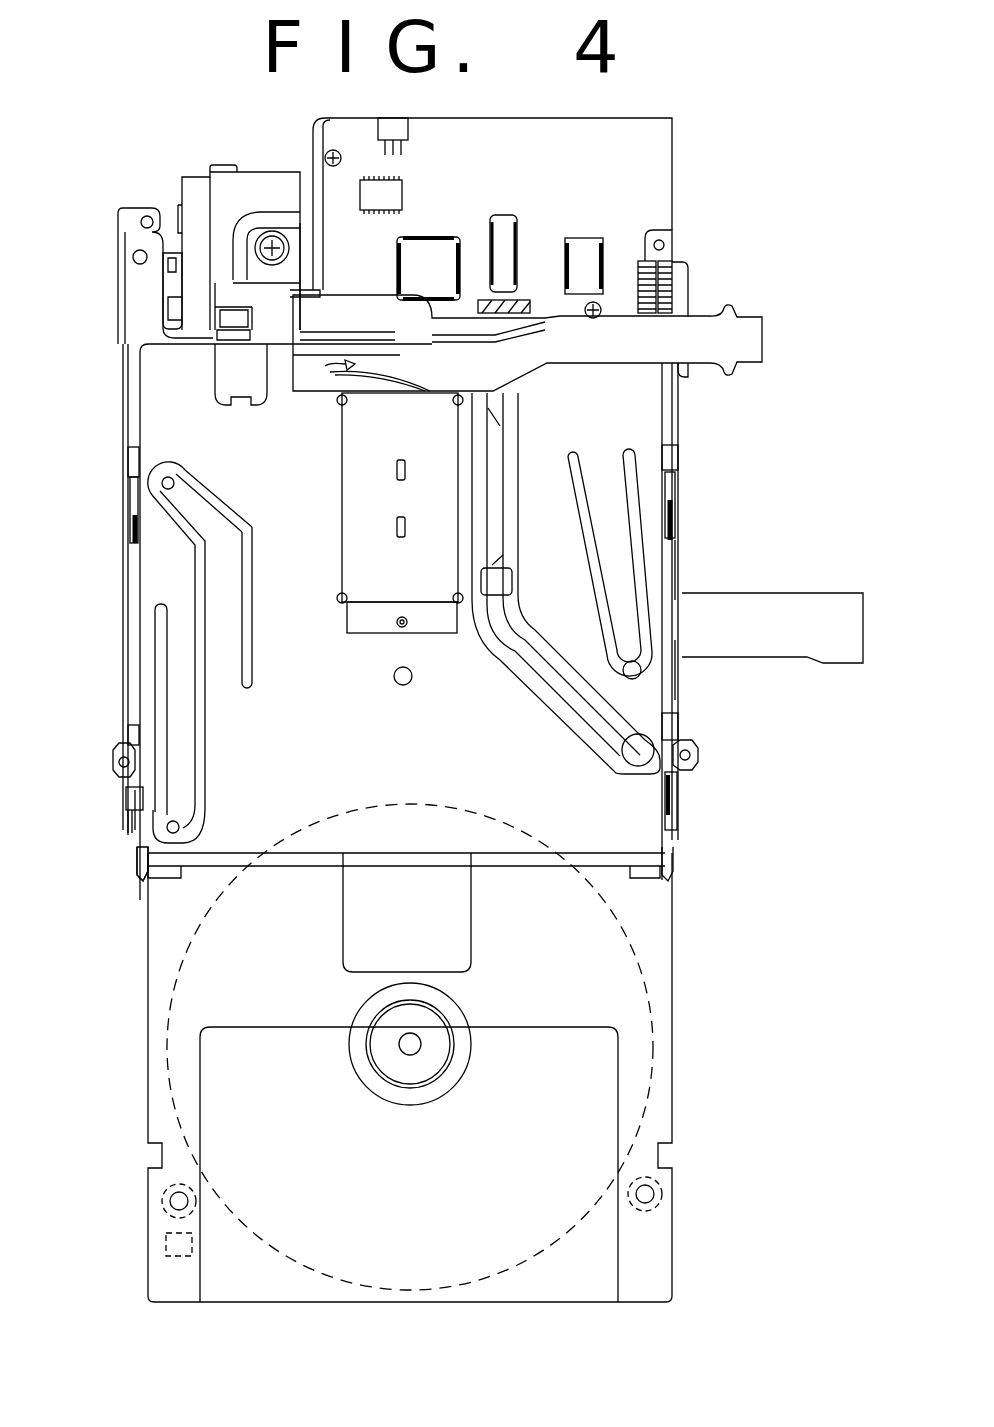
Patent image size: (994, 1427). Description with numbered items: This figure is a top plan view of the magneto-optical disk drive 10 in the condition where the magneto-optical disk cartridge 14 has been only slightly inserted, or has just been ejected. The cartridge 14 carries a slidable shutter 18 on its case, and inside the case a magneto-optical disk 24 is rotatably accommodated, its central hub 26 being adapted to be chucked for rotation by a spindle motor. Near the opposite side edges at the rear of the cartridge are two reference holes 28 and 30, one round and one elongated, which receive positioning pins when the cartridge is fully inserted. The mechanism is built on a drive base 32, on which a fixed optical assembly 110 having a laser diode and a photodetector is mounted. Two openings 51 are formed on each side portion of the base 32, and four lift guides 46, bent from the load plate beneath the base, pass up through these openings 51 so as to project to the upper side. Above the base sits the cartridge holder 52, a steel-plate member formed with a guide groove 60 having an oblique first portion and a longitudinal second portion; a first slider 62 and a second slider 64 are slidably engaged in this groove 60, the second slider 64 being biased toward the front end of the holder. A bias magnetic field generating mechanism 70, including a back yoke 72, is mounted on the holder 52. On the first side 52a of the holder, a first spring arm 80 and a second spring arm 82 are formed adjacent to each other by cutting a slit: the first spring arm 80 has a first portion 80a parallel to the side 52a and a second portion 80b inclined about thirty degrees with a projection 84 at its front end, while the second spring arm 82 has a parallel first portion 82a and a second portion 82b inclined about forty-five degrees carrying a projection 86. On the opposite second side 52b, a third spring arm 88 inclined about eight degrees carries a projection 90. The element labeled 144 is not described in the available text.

The magneto-optical disk drive 10 is at (715, 400).
The magneto-optical disk cartridge 14 is at (672, 935).
The shutter 18 is at (462, 933).
The magneto-optical disk 24 is at (655, 1000).
The central hub 26 is at (452, 1065).
The reference hole 28 is at (165, 1208).
The reference hole 30 is at (660, 1190).
The drive base 32 is at (137, 297).
The lift guide 46 is at (137, 500).
The opening 51 is at (137, 468).
The cartridge holder 52 is at (628, 387).
The first side 52a is at (137, 560).
The second side 52b is at (672, 565).
The guide groove 60 is at (548, 673).
The first slider 62 is at (633, 757).
The second slider 64 is at (510, 585).
The bias magnetic field generating mechanism 70 is at (334, 521).
The back yoke 72 is at (418, 590).
The first spring arm 80 is at (146, 621).
The first portion 80a is at (177, 690).
The second portion 80b is at (190, 825).
The second spring arm 82 is at (257, 605).
The first portion 82a is at (232, 625).
The second portion 82b is at (203, 500).
The projection 84 is at (137, 850).
The projection 86 is at (170, 477).
The third spring arm 88 is at (648, 570).
The projection 90 is at (637, 668).
The fixed optical assembly 110 is at (657, 190).
The motor 144 is at (222, 202).